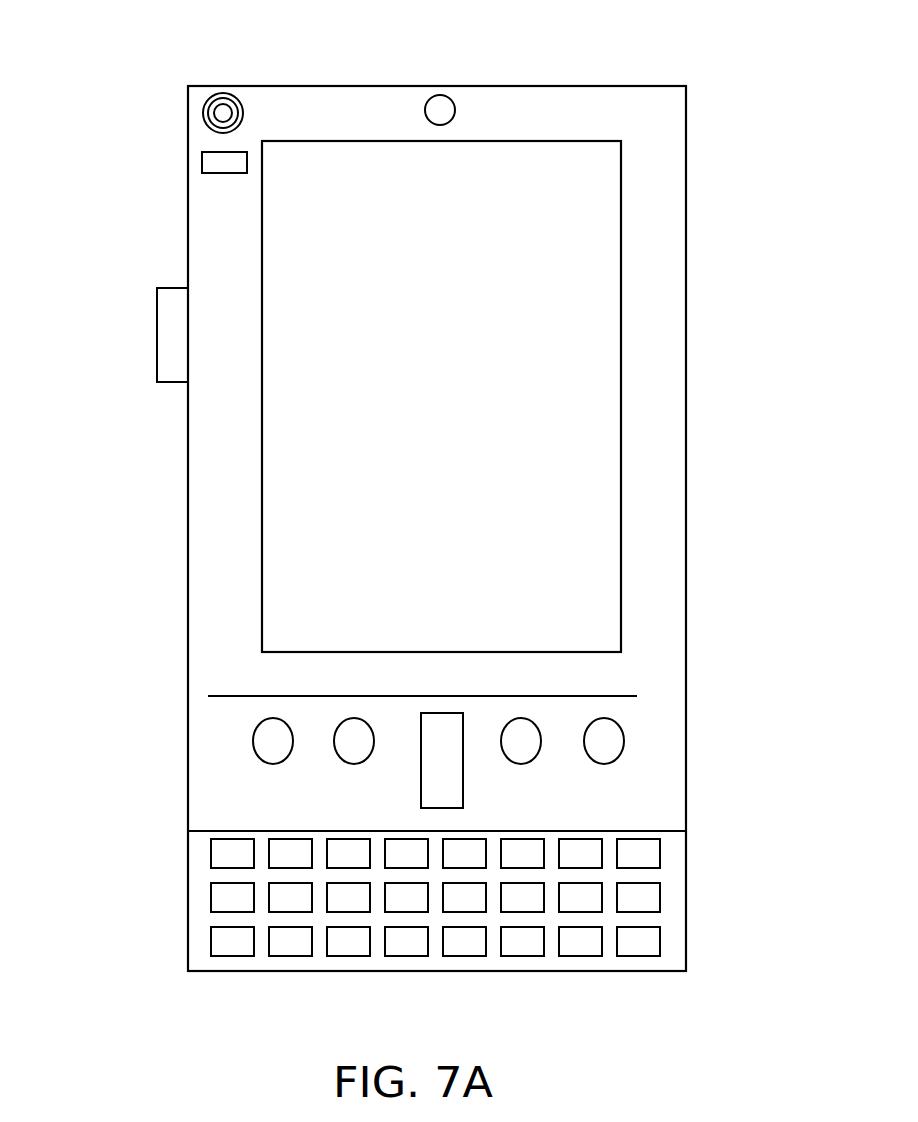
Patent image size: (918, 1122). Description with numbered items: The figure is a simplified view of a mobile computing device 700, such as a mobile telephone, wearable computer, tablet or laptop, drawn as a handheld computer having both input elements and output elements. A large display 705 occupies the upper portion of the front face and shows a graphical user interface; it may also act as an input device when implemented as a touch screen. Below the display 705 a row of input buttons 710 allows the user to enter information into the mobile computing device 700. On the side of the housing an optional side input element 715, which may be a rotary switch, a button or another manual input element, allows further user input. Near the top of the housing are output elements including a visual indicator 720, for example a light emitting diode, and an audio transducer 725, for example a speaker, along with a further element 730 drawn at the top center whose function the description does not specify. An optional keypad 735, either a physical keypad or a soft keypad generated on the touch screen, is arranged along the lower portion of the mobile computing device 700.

The mobile computing device 700 is at (672, 103).
The display 705 is at (373, 565).
The input buttons 710 is at (440, 767).
The side input element 715 is at (157, 337).
The visual indicator 720 is at (202, 167).
The audio transducer 725 is at (204, 113).
The speaker 730 is at (453, 108).
The keypad 735 is at (197, 945).